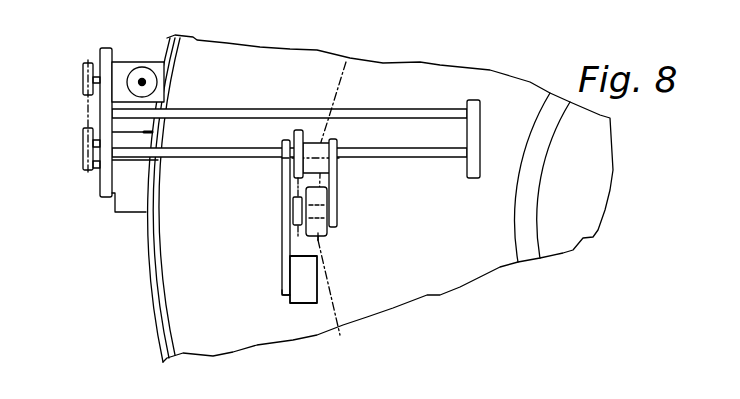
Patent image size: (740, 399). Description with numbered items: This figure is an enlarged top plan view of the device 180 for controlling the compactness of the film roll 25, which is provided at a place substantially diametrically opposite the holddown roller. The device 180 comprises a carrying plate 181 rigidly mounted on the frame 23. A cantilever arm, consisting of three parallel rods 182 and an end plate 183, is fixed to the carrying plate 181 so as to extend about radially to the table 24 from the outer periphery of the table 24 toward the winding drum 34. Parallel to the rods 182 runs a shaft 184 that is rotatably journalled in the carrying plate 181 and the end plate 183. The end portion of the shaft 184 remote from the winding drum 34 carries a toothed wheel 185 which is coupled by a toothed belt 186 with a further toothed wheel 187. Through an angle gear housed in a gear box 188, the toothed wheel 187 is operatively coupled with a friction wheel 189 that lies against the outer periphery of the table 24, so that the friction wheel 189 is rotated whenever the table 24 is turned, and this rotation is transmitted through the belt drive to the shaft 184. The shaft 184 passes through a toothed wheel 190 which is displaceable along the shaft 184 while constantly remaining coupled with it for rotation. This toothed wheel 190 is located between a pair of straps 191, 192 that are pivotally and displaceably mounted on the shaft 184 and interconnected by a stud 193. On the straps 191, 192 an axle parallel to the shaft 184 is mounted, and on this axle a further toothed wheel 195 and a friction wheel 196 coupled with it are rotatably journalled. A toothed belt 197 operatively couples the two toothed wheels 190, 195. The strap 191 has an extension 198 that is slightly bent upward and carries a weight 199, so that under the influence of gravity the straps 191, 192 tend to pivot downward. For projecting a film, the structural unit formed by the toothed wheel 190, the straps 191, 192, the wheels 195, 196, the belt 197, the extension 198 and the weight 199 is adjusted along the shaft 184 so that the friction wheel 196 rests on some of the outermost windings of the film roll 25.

The frame 23 is at (118, 216).
The table 24 is at (151, 287).
The film roll 25 is at (330, 322).
The winding drum 34 is at (517, 242).
The device for controlling the compactness of the film roll 180 is at (350, 88).
The carrying plate 181 is at (98, 191).
The parallel rods 182 is at (233, 89).
The end plate 183 is at (465, 104).
The shaft 184 is at (215, 157).
The toothed wheel 185 is at (82, 167).
The toothed belt 186 is at (87, 103).
The further toothed wheel 187 is at (82, 65).
The gear box 188 is at (128, 58).
The friction wheel 189 is at (145, 70).
The toothed wheel 190 is at (292, 132).
The strap 191 is at (282, 166).
The strap 192 is at (328, 193).
The stud 193 is at (337, 168).
The further toothed wheel 195 is at (293, 229).
The friction wheel 196 is at (319, 233).
The toothed belt 197 is at (297, 192).
The extension 198 is at (283, 265).
The weight 199 is at (287, 305).